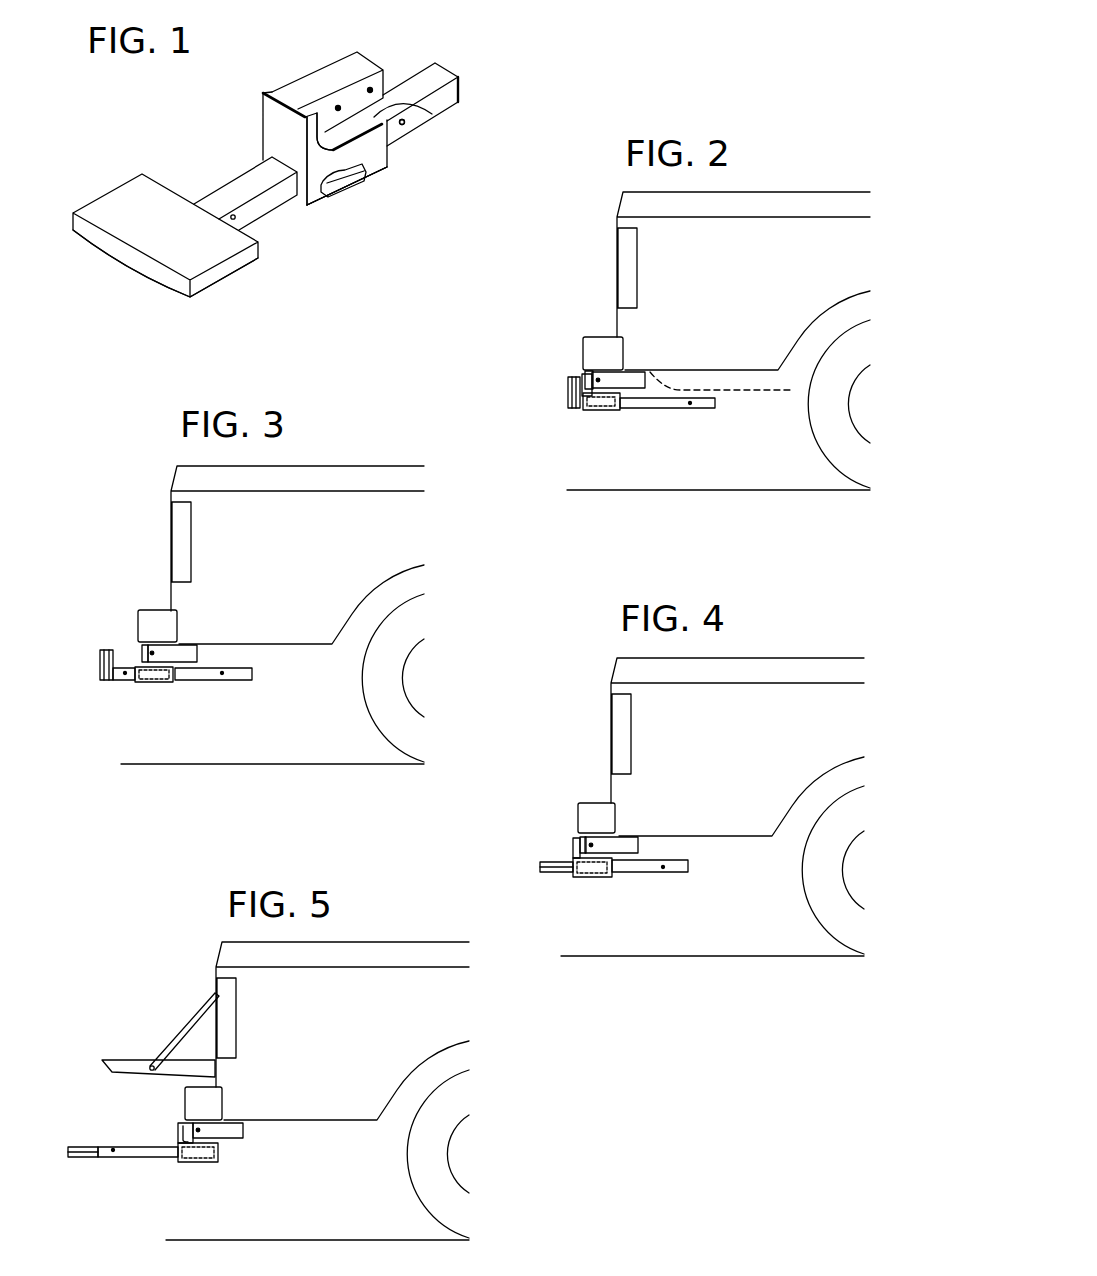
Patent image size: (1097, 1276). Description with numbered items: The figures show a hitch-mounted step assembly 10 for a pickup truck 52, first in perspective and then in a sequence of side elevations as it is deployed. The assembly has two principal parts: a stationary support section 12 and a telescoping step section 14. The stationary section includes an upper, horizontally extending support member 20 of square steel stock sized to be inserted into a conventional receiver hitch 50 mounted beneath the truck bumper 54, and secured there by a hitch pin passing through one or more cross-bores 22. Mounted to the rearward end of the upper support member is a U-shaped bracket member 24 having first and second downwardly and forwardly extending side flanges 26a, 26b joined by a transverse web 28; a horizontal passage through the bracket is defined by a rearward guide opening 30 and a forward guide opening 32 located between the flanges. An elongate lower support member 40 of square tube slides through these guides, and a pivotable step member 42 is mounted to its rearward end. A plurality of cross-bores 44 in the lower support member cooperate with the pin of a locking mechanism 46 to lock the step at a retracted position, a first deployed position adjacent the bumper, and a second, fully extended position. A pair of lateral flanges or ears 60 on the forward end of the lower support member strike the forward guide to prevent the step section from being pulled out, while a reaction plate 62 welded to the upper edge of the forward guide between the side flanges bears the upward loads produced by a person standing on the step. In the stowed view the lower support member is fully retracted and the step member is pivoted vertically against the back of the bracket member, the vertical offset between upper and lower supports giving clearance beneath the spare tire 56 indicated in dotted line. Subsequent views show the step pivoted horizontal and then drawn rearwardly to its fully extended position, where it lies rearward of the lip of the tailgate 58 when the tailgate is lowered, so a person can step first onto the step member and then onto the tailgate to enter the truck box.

In FIG. 1, the step assembly 10 is at (123, 111).
In FIG. 2, the step assembly 10 is at (550, 379).
In FIG. 3, the step assembly 10 is at (98, 639).
In FIG. 4, the step assembly 10 is at (553, 836).
In FIG. 5, the step assembly 10 is at (152, 1130).
In FIG. 1, the stationary support section 12 is at (381, 193).
In FIG. 1, the telescoping step section 14 is at (256, 274).
In FIG. 1, the upper support member 20 is at (362, 60).
In FIG. 1, the cross-bores 22 is at (368, 90).
In FIG. 1, the bracket member 24 is at (312, 201).
In FIG. 2, the bracket member 24 is at (610, 411).
In FIG. 3, the bracket member 24 is at (163, 683).
In FIG. 4, the bracket member 24 is at (602, 878).
In FIG. 5, the bracket member 24 is at (207, 1162).
In FIG. 1, the first side flange 26a is at (380, 165).
In FIG. 1, the second side flange 26b is at (265, 88).
In FIG. 1, the transverse web 28 is at (270, 129).
In FIG. 1, the rearward guide opening 30 is at (261, 158).
In FIG. 3, the rearward guide opening 30 is at (124, 674).
In FIG. 1, the forward guide opening 32 is at (406, 122).
In FIG. 1, the lower support member 40 is at (446, 66).
In FIG. 2, the lower support member 40 is at (668, 404).
In FIG. 3, the lower support member 40 is at (207, 680).
In FIG. 4, the lower support member 40 is at (648, 870).
In FIG. 5, the lower support member 40 is at (127, 1158).
In FIG. 1, the step member 42 is at (118, 195).
In FIG. 2, the step member 42 is at (568, 394).
In FIG. 3, the step member 42 is at (100, 674).
In FIG. 4, the step member 42 is at (542, 861).
In FIG. 5, the step member 42 is at (85, 1158).
In FIG. 1, the cross-bores 44 is at (232, 214).
In FIG. 1, the locking mechanism 46 is at (340, 194).
In FIG. 2, the receiver hitch 50 is at (656, 378).
In FIG. 3, the receiver hitch 50 is at (205, 652).
In FIG. 4, the receiver hitch 50 is at (650, 843).
In FIG. 5, the receiver hitch 50 is at (252, 1128).
In FIG. 2, the pickup truck 52 is at (803, 203).
In FIG. 3, the pickup truck 52 is at (358, 477).
In FIG. 4, the pickup truck 52 is at (798, 670).
In FIG. 5, the pickup truck 52 is at (405, 957).
In FIG. 2, the truck bumper 54 is at (592, 347).
In FIG. 3, the truck bumper 54 is at (145, 620).
In FIG. 4, the truck bumper 54 is at (585, 813).
In FIG. 5, the truck bumper 54 is at (188, 1102).
In FIG. 2, the spare tire 56 is at (748, 391).
In FIG. 5, the tailgate 58 is at (123, 1060).
In FIG. 1, the flanges or ears 60 is at (464, 96).
In FIG. 1, the reaction plate 62 is at (385, 128).